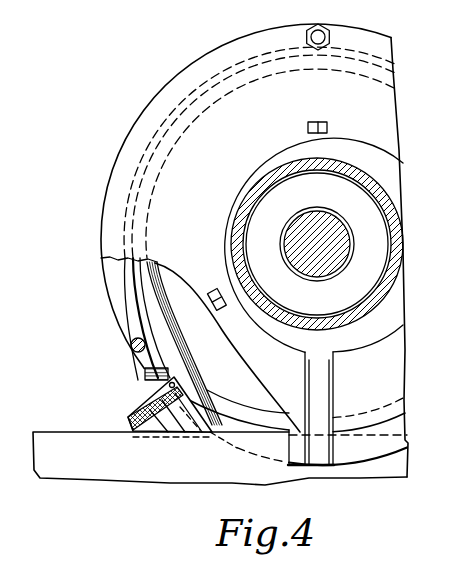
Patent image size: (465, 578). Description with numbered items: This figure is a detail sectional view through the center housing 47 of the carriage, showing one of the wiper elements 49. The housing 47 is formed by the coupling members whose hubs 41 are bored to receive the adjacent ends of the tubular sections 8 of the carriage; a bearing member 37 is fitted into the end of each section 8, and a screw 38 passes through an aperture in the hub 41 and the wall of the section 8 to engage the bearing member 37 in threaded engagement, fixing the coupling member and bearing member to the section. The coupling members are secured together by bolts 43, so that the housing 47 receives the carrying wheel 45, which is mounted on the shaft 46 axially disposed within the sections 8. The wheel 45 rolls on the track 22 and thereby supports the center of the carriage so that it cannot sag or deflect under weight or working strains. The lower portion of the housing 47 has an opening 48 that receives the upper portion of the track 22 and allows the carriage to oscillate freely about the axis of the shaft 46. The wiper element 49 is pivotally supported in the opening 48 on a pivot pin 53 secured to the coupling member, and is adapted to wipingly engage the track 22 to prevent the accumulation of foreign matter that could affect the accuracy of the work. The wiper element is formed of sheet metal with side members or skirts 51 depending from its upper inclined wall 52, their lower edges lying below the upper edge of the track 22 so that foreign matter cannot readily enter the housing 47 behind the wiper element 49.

The tubular section 8 is at (349, 167).
The track 22 is at (43, 460).
The bearing member 37 is at (284, 244).
The screw 38 is at (321, 121).
The hub 41 is at (293, 301).
The bolt 43 is at (327, 29).
The carrying wheel 45 is at (148, 304).
The shaft 46 is at (330, 215).
The center housing 47 is at (138, 105).
The opening 48 is at (168, 386).
The wiper element 49 is at (130, 397).
The side member 51 is at (178, 426).
The upper inclined wall 52 is at (137, 413).
The pivot pin 53 is at (145, 373).